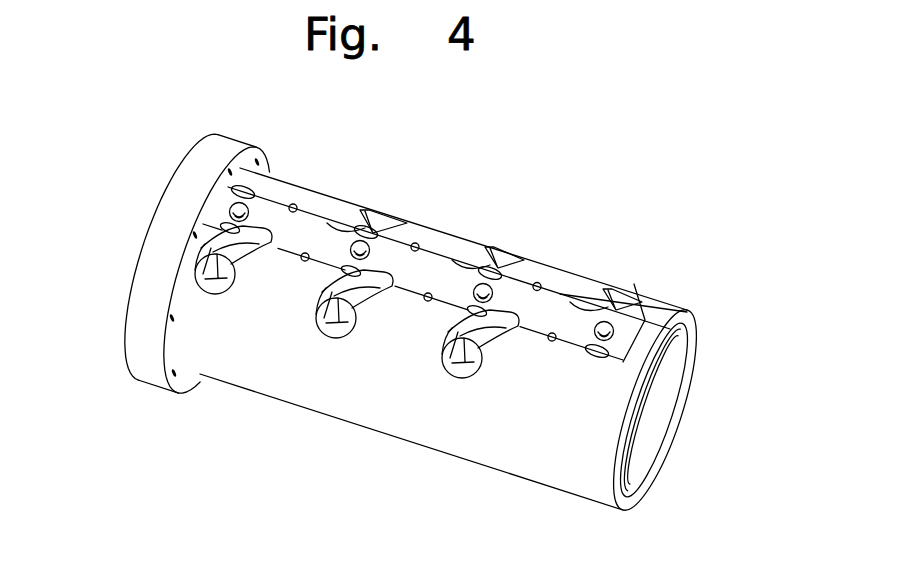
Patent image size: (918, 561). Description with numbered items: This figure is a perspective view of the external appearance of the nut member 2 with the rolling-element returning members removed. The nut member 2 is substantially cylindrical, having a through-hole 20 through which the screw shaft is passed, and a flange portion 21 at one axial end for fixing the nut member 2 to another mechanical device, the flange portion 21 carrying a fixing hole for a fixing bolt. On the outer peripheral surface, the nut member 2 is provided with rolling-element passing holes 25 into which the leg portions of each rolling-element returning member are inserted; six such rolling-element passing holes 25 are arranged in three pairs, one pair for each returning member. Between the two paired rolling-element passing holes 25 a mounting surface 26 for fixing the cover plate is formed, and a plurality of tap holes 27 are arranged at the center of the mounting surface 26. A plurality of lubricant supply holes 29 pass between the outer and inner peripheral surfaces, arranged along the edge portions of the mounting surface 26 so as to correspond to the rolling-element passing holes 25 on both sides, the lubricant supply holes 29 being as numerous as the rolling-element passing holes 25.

The nut member 2 is at (343, 419).
The through-hole 20 is at (660, 423).
The flange portion 21 is at (148, 376).
The rolling-element passing holes 25 is at (201, 260).
The mounting surface 26 is at (428, 262).
The tap holes 27 is at (256, 192).
The lubricant supply holes 29 is at (239, 203).